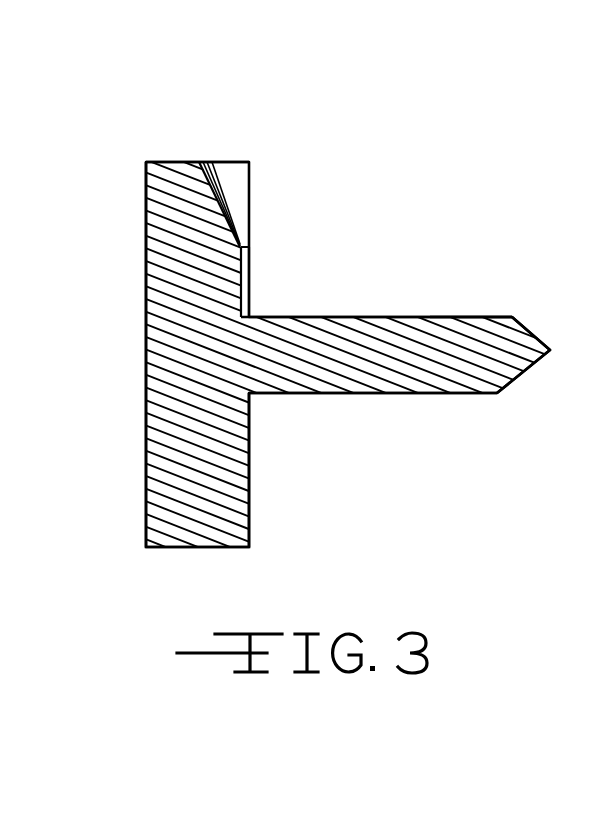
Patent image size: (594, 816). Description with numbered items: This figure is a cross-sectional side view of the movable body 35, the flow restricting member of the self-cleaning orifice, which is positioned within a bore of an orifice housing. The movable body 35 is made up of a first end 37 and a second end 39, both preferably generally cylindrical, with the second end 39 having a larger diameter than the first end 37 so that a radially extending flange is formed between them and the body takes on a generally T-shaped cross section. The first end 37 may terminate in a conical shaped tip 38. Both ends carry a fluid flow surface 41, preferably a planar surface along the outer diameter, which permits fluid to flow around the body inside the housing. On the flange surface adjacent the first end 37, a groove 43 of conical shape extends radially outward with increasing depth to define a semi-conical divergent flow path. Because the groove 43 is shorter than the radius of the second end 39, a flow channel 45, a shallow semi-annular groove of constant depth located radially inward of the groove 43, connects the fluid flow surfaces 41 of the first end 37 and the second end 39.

The movable body 35 is at (375, 198).
The first end 37 is at (318, 393).
The conical shaped tip 38 is at (512, 365).
The second end 39 is at (182, 492).
The fluid flow surface 41 is at (177, 162).
The groove 43 is at (236, 177).
The flow channel 45 is at (241, 280).